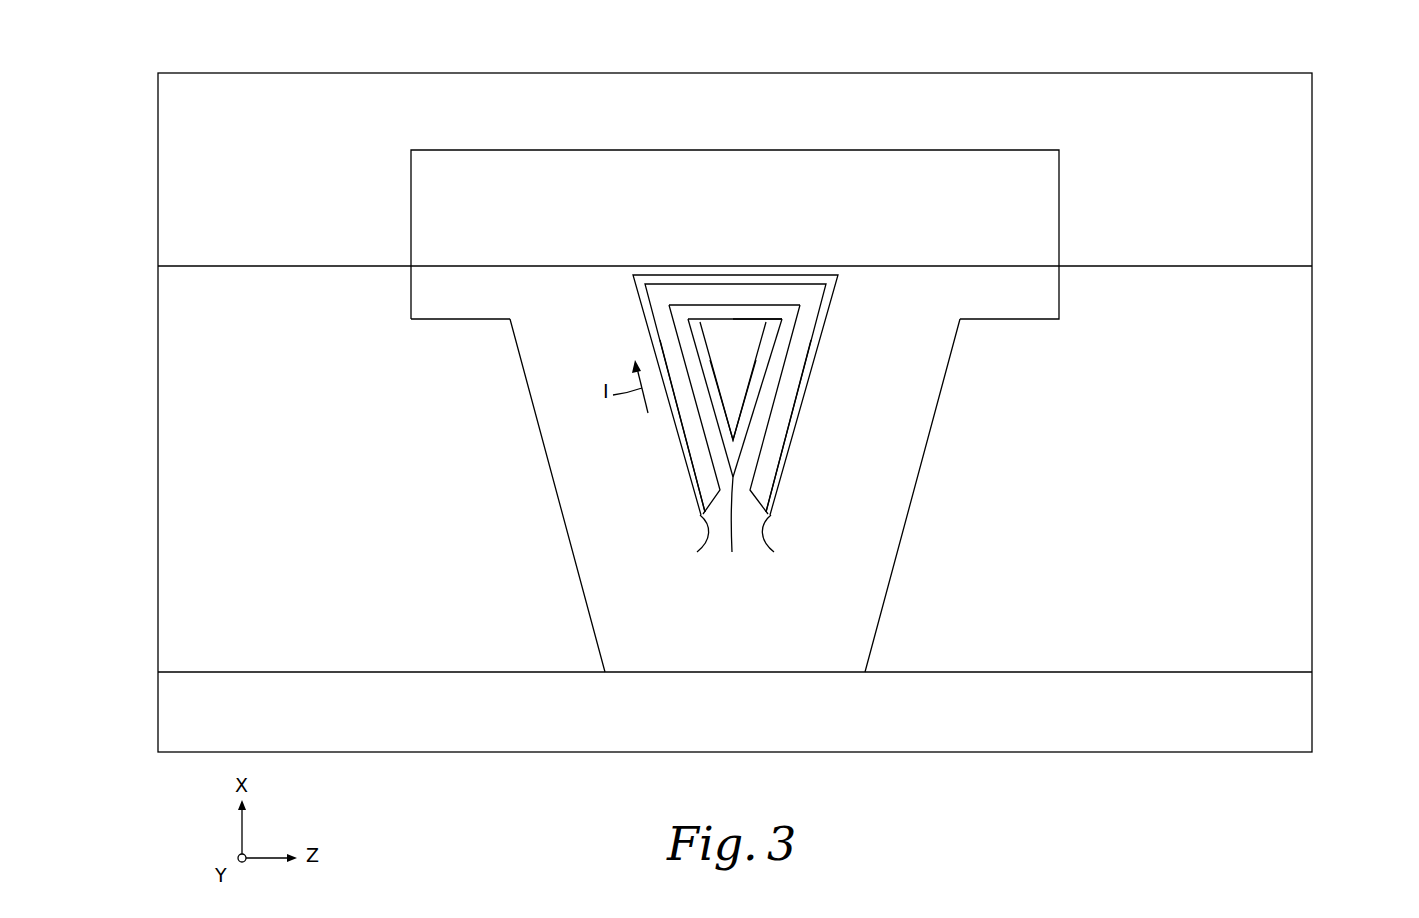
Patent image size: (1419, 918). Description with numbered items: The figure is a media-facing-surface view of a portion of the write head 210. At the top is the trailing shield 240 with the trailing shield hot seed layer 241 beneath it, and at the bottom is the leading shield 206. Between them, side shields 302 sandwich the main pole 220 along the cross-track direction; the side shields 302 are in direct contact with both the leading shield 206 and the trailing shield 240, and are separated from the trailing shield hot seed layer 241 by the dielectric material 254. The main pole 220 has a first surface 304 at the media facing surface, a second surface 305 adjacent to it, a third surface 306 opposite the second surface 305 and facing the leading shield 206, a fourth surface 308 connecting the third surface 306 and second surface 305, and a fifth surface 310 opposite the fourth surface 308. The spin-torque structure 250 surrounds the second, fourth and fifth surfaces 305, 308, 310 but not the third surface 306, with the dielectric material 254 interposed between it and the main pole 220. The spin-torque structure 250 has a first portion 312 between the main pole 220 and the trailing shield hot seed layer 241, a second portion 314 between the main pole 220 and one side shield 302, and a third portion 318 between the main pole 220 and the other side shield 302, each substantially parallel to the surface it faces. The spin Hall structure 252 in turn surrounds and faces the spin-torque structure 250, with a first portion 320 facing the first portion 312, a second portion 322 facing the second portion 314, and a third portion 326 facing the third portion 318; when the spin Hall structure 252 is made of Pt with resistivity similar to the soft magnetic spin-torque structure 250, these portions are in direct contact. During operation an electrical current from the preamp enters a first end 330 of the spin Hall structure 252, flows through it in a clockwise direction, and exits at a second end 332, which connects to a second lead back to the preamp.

The write head 210 is at (190, 43).
The trailing shield 240 is at (167, 170).
The trailing shield hot seed layer 241 is at (725, 160).
The side shields 302 is at (167, 457).
The leading shield 206 is at (167, 713).
The first portion of the spin Hall structure 320 is at (661, 279).
The second portion of the spin Hall structure 322 is at (643, 317).
The third portion of the spin Hall structure 326 is at (823, 317).
The second portion of the spin-torque structure 314 is at (668, 342).
The third portion of the spin-torque structure 318 is at (800, 340).
The first portion of the spin-torque structure 312 is at (800, 294).
The dielectric material 254 is at (549, 303).
The second surface 305 is at (753, 319).
The fourth surface 308 is at (712, 414).
The fifth surface 310 is at (755, 418).
The spin Hall structure 252 is at (688, 454).
The spin-torque structure 250 is at (768, 455).
The first surface 304 is at (747, 357).
The main pole 220 is at (747, 390).
The first end of the spin Hall structure 330 is at (687, 548).
The third surface 306 is at (736, 529).
The second end of the spin Hall structure 332 is at (785, 548).